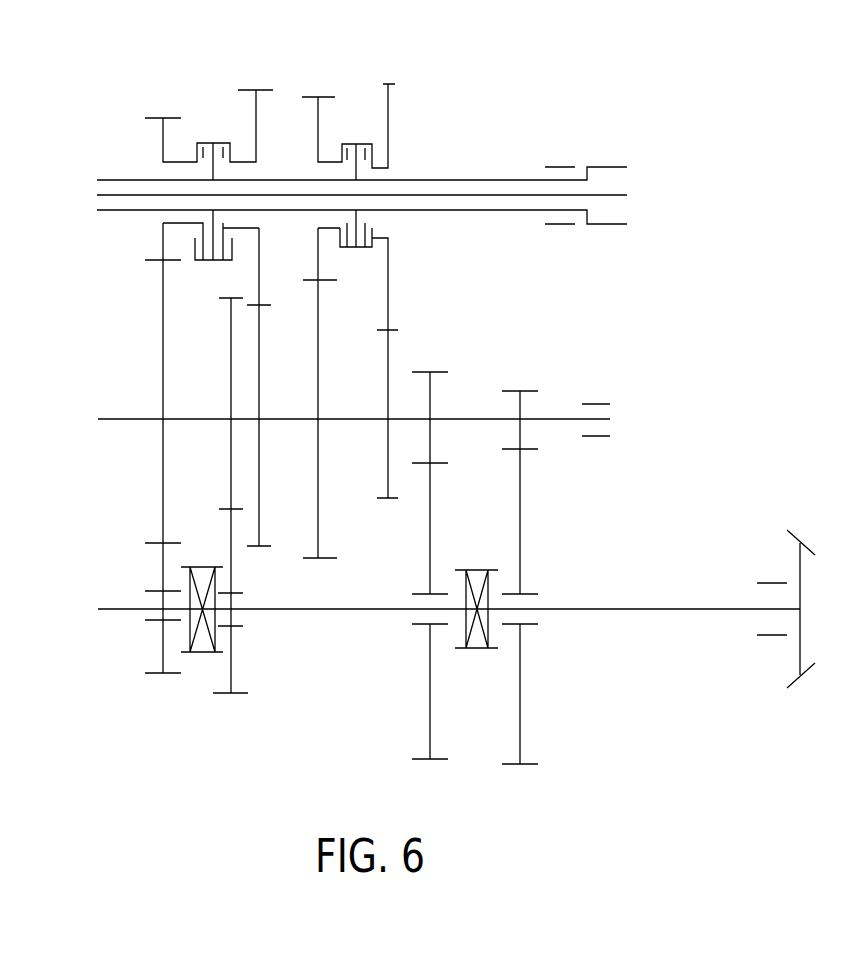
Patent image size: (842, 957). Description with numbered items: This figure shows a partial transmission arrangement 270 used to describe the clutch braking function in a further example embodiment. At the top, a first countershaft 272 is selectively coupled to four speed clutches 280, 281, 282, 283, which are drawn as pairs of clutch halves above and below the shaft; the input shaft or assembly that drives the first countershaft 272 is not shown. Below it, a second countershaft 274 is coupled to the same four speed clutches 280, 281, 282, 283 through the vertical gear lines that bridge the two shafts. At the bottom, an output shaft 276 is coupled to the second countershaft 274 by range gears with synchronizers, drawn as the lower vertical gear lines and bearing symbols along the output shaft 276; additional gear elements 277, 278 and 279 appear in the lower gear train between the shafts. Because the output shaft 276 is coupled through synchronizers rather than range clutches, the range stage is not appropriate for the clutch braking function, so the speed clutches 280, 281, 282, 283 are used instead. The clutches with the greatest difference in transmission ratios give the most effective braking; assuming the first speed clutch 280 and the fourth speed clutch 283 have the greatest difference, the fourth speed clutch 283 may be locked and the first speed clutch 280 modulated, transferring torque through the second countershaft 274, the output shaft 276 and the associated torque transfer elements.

The partial transmission arrangement 270 is at (128, 72).
The first countershaft 272 is at (465, 178).
The second countershaft 274 is at (462, 418).
The output shaft 276 is at (620, 608).
The gear 277 is at (405, 778).
The gear 278 is at (236, 700).
The gear 279 is at (160, 690).
The first speed clutch 280 is at (155, 110).
The second speed clutch 281 is at (335, 93).
The third speed clutch 282 is at (235, 83).
The fourth speed clutch 283 is at (395, 82).